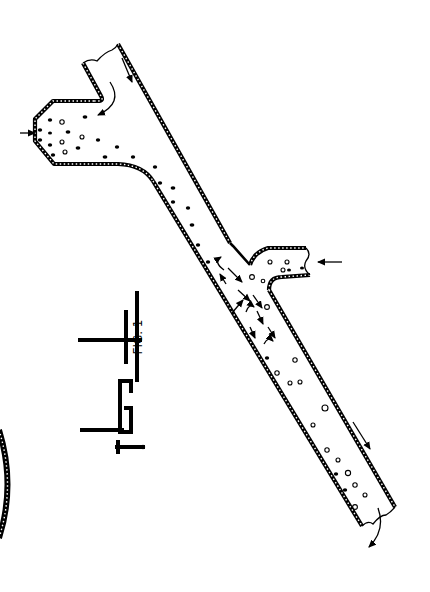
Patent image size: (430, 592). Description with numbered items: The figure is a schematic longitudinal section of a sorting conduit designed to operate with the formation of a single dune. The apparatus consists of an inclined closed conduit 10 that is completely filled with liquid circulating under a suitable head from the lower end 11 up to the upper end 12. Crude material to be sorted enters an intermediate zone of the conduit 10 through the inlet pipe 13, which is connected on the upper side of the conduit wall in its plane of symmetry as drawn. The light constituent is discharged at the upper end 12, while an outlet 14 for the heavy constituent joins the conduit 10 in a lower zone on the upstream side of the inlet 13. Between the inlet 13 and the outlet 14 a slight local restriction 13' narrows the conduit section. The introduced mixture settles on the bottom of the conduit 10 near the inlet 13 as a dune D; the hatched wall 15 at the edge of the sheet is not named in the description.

The inclined closed conduit 10 is at (318, 371).
The lower end 11 is at (115, 66).
The upper end 12 is at (393, 504).
The inlet pipe 13 is at (296, 255).
The local restriction 13' is at (239, 236).
The outlet for the heavy constituent 14 is at (70, 166).
The vessel wall 15 is at (3, 432).
The dune D is at (249, 309).